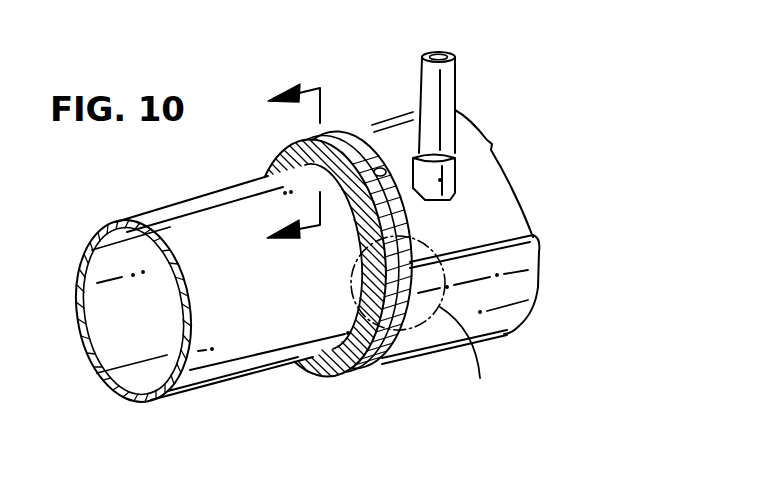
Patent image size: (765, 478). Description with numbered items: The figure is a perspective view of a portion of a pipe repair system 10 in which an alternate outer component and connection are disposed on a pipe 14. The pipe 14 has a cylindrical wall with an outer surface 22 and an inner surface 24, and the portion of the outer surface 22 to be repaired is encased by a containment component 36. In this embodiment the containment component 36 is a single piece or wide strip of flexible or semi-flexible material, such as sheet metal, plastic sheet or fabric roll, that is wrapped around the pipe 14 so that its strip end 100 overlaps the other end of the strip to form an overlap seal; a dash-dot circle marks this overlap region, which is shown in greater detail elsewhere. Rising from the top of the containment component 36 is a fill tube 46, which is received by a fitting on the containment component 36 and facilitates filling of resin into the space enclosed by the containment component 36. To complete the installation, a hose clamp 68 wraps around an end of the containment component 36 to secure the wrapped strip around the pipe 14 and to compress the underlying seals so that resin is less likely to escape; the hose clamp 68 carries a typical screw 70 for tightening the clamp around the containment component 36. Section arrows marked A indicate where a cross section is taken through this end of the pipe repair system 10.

The pipe repair system 10 is at (592, 130).
The pipe 14 is at (300, 392).
The outer surface 22 is at (257, 315).
The inner surface 24 is at (113, 307).
The containment component 36 is at (493, 175).
The fill tube 46 is at (455, 93).
The hose clamp 68 is at (389, 190).
The screw 70 is at (383, 177).
The strip end 100 is at (476, 236).